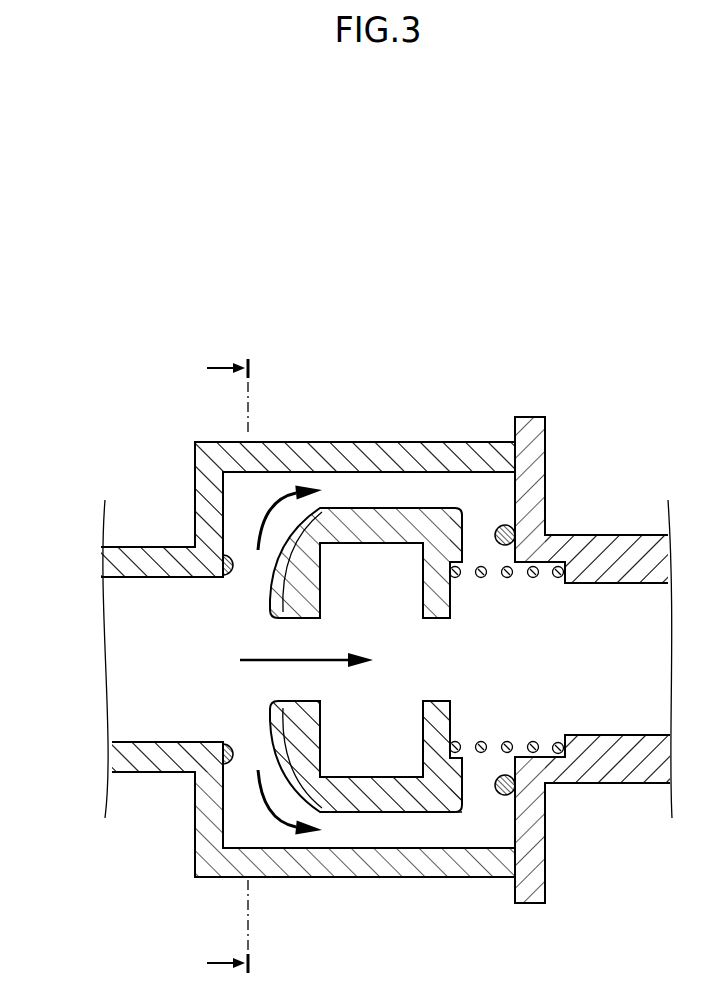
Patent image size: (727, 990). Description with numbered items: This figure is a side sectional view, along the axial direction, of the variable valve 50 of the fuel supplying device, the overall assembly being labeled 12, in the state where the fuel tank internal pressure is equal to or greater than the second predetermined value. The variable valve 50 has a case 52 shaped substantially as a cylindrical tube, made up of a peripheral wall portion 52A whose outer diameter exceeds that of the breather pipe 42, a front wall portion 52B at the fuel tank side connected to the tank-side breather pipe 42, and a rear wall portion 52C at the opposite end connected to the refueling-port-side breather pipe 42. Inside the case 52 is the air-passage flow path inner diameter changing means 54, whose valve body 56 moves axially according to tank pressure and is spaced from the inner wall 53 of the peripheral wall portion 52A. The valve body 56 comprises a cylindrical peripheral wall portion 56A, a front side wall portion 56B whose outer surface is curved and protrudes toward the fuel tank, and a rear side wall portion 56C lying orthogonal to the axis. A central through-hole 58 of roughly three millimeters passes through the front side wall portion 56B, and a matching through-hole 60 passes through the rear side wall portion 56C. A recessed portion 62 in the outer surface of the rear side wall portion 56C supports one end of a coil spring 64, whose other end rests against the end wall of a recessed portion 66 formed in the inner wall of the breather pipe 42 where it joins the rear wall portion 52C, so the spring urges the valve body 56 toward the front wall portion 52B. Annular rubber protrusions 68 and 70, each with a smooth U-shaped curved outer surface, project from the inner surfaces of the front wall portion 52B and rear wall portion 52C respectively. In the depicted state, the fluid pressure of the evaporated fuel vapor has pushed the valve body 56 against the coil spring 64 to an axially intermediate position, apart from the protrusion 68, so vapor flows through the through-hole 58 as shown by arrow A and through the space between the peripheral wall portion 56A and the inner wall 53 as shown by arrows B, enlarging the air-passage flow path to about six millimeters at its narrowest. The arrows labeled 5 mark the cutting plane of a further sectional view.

The check valve 12 is at (513, 312).
The breather pipe 42 is at (127, 560).
The variable valve 50 is at (403, 403).
The case 52 is at (362, 442).
The peripheral wall portion 52A is at (327, 458).
The front wall portion 52B is at (205, 488).
The rear wall portion 52C is at (535, 488).
The inner wall 53 is at (466, 478).
The air-passage flow path inner diameter changing means 54 is at (388, 828).
The valve body 56 is at (422, 810).
The peripheral wall portion 56A is at (347, 805).
The front side wall portion 56B is at (280, 723).
The rear side wall portion 56C is at (440, 713).
The through-hole 58 is at (287, 617).
The through-hole 60 is at (425, 630).
The recessed portion 62 is at (450, 600).
The coil spring 64 is at (531, 580).
The recessed portion 66 is at (560, 580).
The protrusion 68 is at (225, 580).
The protrusion 70 is at (505, 526).
The arrow A is at (313, 665).
The arrows B is at (263, 518).
The section line for FIG. 5 is at (216, 666).